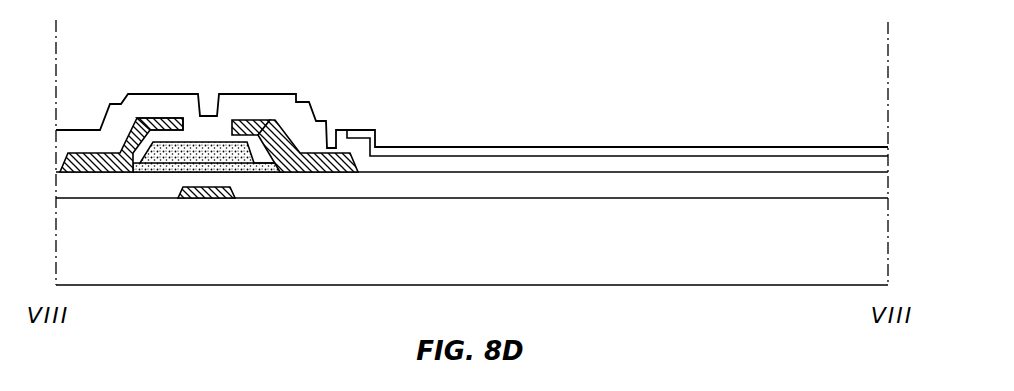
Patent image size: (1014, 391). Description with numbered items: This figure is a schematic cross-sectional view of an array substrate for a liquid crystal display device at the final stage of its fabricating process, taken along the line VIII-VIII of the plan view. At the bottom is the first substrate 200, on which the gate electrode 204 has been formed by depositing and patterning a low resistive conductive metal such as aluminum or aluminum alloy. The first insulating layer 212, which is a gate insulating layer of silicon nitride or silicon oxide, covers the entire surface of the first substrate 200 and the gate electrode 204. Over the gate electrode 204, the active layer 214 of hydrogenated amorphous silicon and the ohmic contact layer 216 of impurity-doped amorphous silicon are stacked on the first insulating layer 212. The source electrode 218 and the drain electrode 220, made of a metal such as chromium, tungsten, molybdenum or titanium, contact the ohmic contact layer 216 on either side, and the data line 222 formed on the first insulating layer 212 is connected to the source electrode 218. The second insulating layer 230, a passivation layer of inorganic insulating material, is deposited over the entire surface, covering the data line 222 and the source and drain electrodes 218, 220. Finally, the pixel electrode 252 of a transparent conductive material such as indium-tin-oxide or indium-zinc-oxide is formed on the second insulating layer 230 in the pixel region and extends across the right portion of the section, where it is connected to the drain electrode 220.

The first substrate 200 is at (500, 258).
The gate electrode 204 is at (212, 199).
The first insulating layer 212 is at (627, 171).
The active layer 214 is at (266, 170).
The ohmic contact layer 216 is at (299, 130).
The source electrode 218 is at (152, 117).
The drain electrode 220 is at (262, 119).
The data line 222 is at (81, 151).
The second insulating layer 230 is at (108, 106).
The pixel electrode 252 is at (505, 145).